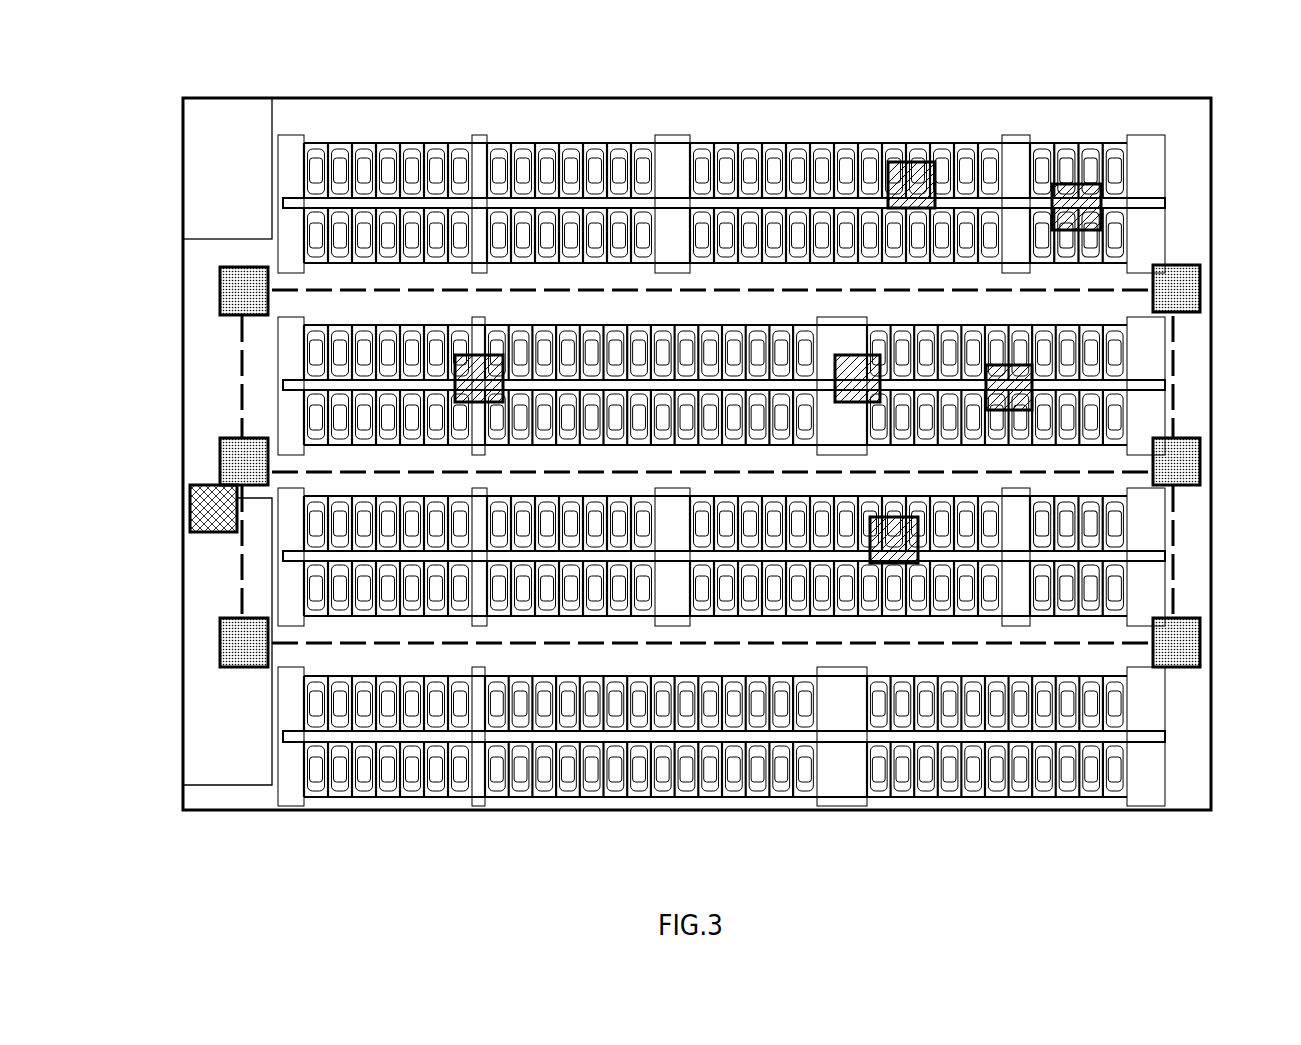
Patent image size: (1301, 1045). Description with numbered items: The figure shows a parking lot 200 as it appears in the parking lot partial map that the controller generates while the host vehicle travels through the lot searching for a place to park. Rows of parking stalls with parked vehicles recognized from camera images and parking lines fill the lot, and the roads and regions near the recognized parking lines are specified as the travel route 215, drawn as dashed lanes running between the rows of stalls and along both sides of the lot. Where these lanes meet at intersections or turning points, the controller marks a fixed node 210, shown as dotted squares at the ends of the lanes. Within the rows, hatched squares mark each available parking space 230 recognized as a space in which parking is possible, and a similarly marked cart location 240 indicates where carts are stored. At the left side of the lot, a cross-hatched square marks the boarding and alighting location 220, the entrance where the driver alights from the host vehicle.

The parking lot 200 is at (1145, 78).
The fixed node 210 is at (220, 289).
The travel route 215 is at (790, 290).
The boarding and alighting location 220 is at (190, 490).
The available parking space 230 is at (905, 162).
The cart location 240 is at (473, 355).